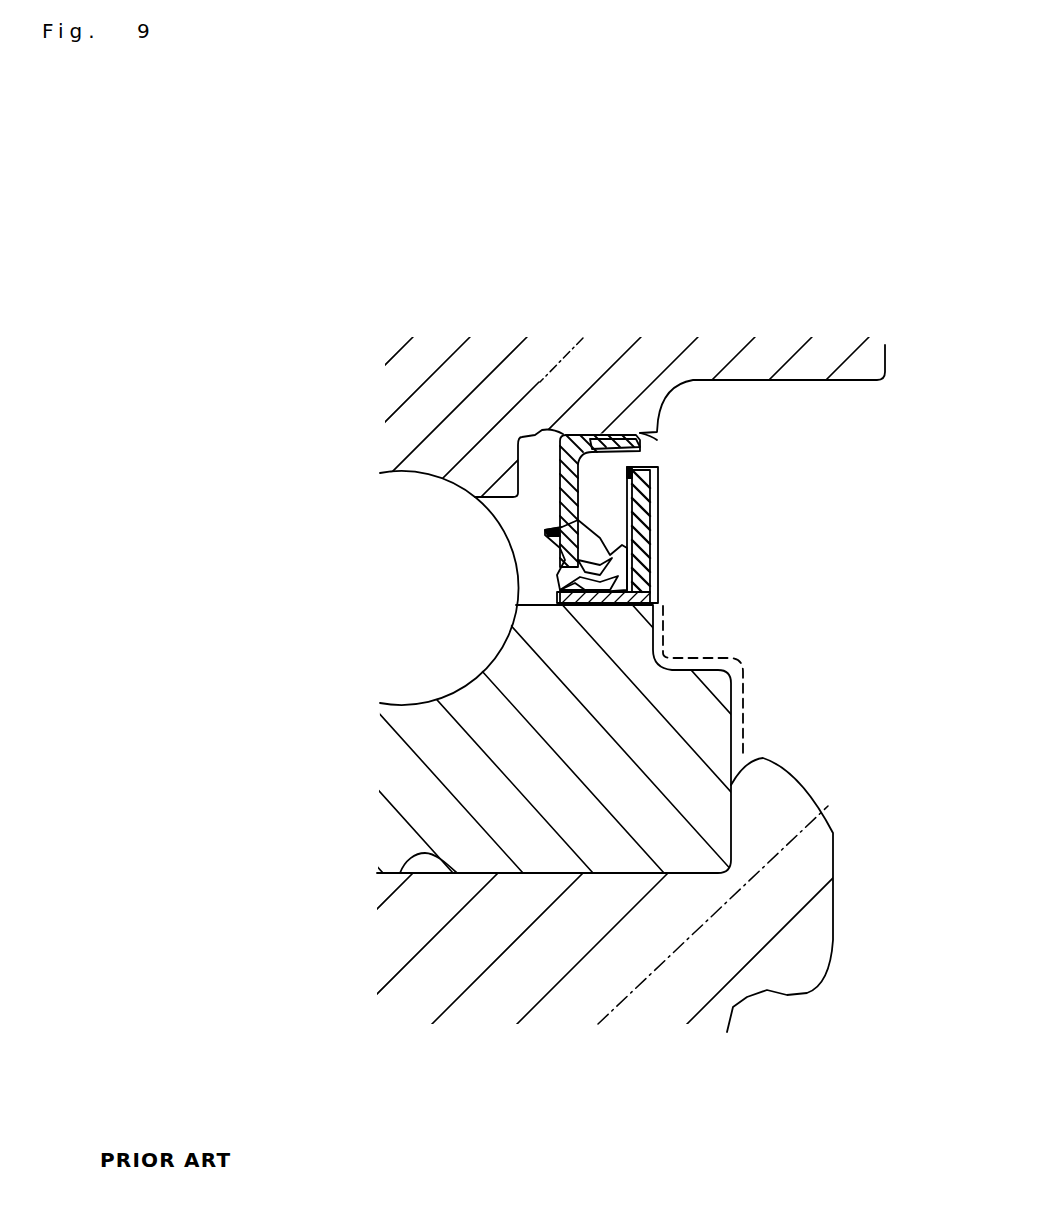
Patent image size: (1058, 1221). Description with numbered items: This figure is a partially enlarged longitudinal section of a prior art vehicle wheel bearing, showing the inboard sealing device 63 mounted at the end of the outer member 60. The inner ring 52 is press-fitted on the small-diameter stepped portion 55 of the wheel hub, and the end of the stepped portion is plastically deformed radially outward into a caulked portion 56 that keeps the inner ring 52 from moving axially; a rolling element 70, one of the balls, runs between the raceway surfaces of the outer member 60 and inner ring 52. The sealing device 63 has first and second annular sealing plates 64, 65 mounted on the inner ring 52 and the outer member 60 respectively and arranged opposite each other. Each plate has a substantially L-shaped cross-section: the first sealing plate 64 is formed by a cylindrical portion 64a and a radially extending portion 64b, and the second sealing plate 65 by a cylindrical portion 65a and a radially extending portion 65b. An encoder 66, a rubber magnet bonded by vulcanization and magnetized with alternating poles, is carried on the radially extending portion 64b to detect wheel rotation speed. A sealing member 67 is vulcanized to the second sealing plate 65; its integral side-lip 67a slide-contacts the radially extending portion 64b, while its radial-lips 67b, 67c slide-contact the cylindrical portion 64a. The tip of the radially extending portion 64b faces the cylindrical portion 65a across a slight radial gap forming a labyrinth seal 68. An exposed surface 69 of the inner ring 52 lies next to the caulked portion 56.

The inner ring 52 is at (472, 797).
The stepped portion 55 is at (395, 873).
The caulked portion 56 is at (780, 827).
The outer member 60 is at (453, 393).
The sealing device 63 is at (662, 458).
The first annular sealing plate 64 is at (689, 548).
The cylindrical portion 64a is at (591, 606).
The radially extending portion 64b is at (652, 520).
The second annular sealing plate 65 is at (576, 394).
The cylindrical portion 65a is at (598, 437).
The radially extending portion 65b is at (562, 435).
The encoder 66 is at (659, 484).
The sealing member 67 is at (441, 553).
The side-lip 67a is at (558, 503).
The radial-lip 67b is at (560, 547).
The radial-lip 67c is at (560, 575).
The labyrinth seal 68 is at (640, 457).
The exposed surface 69 is at (746, 690).
The rolling element 70 is at (387, 488).